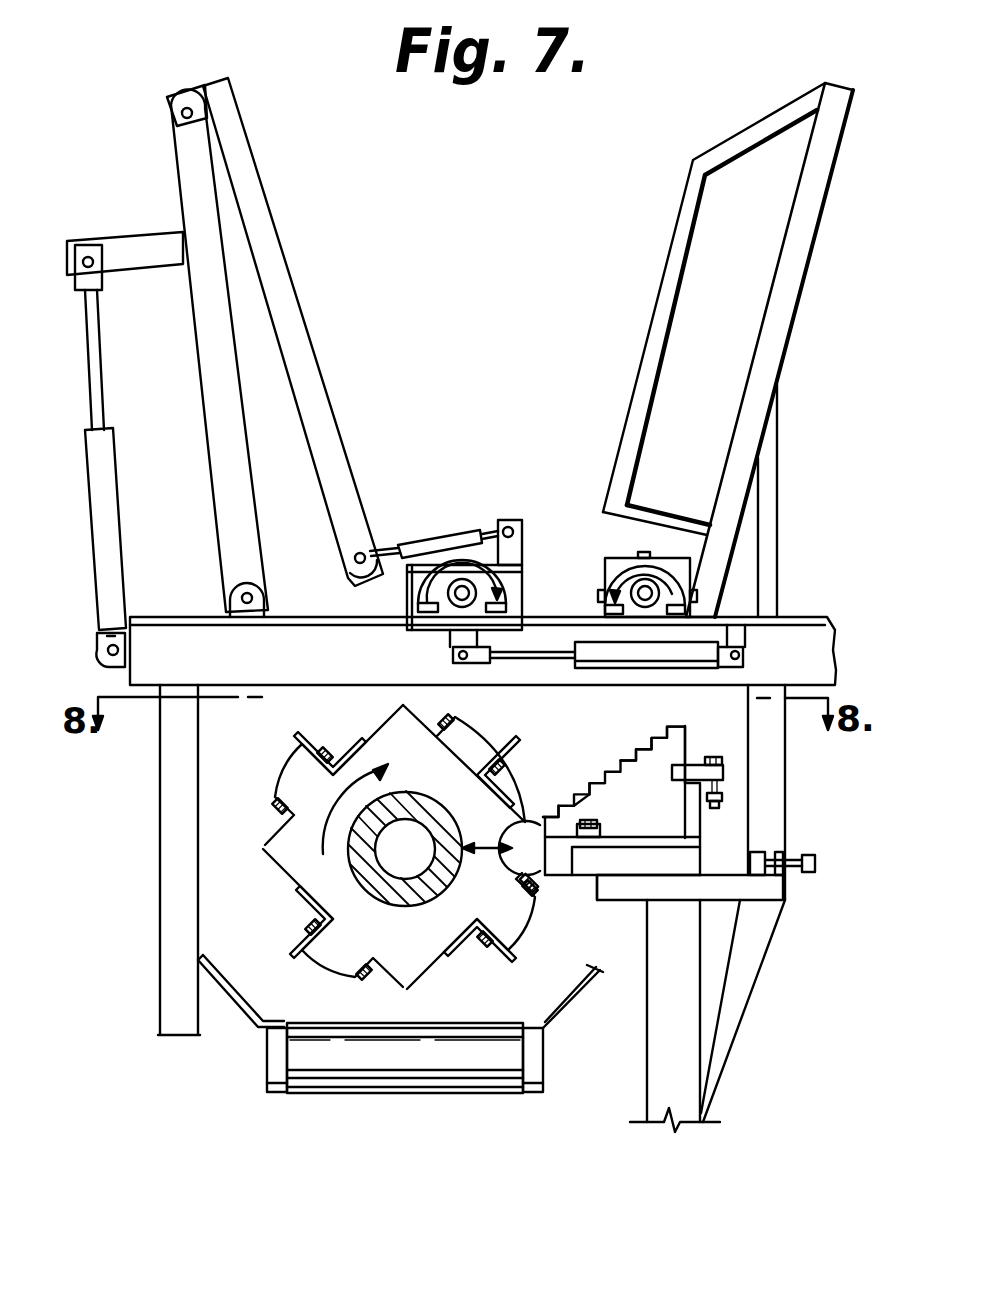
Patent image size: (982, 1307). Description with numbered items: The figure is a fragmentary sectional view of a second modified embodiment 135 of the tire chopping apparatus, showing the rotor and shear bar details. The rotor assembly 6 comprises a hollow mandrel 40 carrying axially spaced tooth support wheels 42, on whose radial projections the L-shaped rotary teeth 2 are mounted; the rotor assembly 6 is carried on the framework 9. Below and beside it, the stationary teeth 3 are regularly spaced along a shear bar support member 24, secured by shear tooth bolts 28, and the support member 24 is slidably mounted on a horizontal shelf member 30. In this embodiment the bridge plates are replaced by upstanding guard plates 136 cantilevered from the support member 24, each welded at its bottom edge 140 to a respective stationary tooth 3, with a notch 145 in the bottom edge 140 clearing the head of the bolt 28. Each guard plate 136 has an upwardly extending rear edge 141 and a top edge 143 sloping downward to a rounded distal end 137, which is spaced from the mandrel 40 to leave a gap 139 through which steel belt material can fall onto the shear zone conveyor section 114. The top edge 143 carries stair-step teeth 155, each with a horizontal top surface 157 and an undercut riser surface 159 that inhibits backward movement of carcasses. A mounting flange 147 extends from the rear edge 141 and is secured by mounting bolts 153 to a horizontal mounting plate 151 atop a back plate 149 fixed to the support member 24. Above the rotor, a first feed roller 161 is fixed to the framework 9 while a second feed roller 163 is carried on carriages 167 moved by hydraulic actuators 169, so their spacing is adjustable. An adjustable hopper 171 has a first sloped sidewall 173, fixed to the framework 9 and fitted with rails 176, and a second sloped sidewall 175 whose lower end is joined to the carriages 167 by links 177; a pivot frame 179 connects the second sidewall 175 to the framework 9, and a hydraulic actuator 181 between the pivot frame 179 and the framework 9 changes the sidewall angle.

The second modified embodiment 135 is at (338, 105).
The pivot frame 179 is at (172, 157).
The adjustable hopper 171 is at (528, 347).
The second sloped sidewall 175 is at (310, 334).
The hydraulic actuator 181 is at (98, 355).
The rails 176 is at (672, 232).
The first sloped sidewall 173 is at (768, 300).
The links 177 is at (437, 540).
The second feed roller 163 is at (499, 569).
The carriages 167 is at (508, 580).
The hydraulic actuators 169 is at (552, 653).
The first feed roller 161 is at (615, 560).
The framework 9 is at (160, 770).
The rotor assembly 6 is at (374, 840).
The rotary teeth 2 is at (302, 733).
The mandrel 40 is at (405, 790).
The tooth support wheels 42 is at (275, 853).
The gap 139 is at (488, 838).
The distal end 137 is at (512, 855).
The top edge 143 is at (598, 764).
The teeth 155 is at (637, 740).
The top surface 157 is at (590, 778).
The riser surface 159 is at (547, 815).
The rear edge 141 is at (713, 784).
The guard plates 136 is at (688, 741).
The mounting flange 147 is at (724, 773).
The mounting bolts 153 is at (714, 758).
The mounting plate 151 is at (724, 798).
The notch 145 is at (600, 822).
The shear tooth bolts 28 is at (585, 822).
The shear bar support member 24 is at (573, 877).
The stationary teeth 3 is at (538, 895).
The bottom edge 140 is at (650, 840).
The back plate 149 is at (702, 832).
The shelf member 30 is at (783, 890).
The shear zone conveyor section 114 is at (463, 1023).